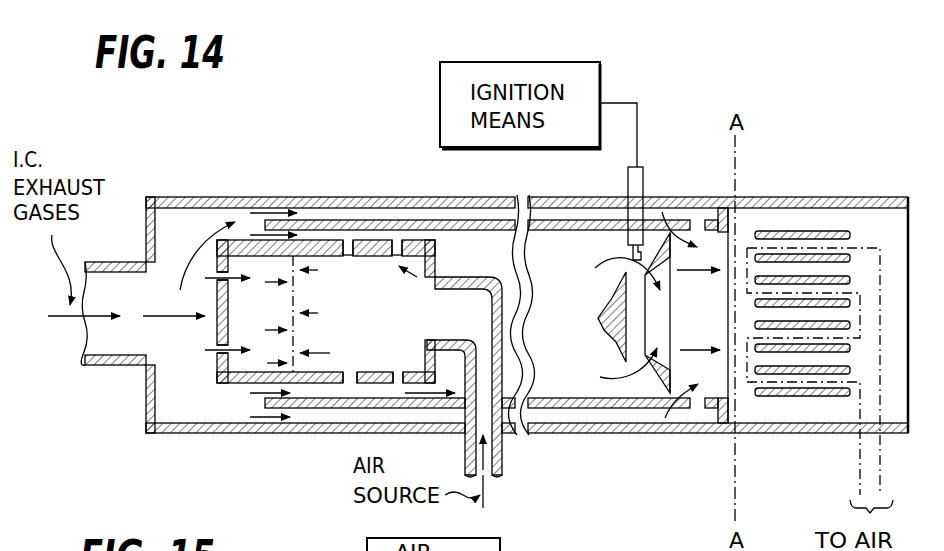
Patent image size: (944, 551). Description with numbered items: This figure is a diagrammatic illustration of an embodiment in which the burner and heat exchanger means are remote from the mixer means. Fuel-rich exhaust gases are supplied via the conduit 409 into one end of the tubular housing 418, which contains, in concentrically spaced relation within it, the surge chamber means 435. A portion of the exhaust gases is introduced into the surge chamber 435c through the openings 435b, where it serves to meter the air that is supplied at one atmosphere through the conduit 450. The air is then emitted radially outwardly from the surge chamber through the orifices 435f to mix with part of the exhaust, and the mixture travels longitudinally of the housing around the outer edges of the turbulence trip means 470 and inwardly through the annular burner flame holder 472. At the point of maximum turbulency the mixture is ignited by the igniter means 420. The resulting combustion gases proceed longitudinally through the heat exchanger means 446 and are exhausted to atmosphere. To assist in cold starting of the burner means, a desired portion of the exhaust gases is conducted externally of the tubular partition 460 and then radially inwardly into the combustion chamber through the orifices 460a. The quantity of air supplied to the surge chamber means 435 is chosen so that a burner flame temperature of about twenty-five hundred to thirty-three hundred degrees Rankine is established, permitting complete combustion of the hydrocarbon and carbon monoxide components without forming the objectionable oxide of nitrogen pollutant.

The conduit 409 is at (115, 262).
The tubular housing 418 is at (248, 197).
The surge chamber means 435 is at (370, 240).
The orifices 435f is at (343, 239).
The openings 435b is at (217, 279).
The surge chamber 435c is at (418, 327).
The tubular partition 460 is at (475, 220).
The orifices 460a is at (683, 213).
The igniter means 420 is at (640, 183).
The conduit 450 is at (503, 458).
The turbulence trip means 470 is at (622, 330).
The annular burner flame holder 472 is at (660, 325).
The heat exchanger means 446 is at (801, 230).